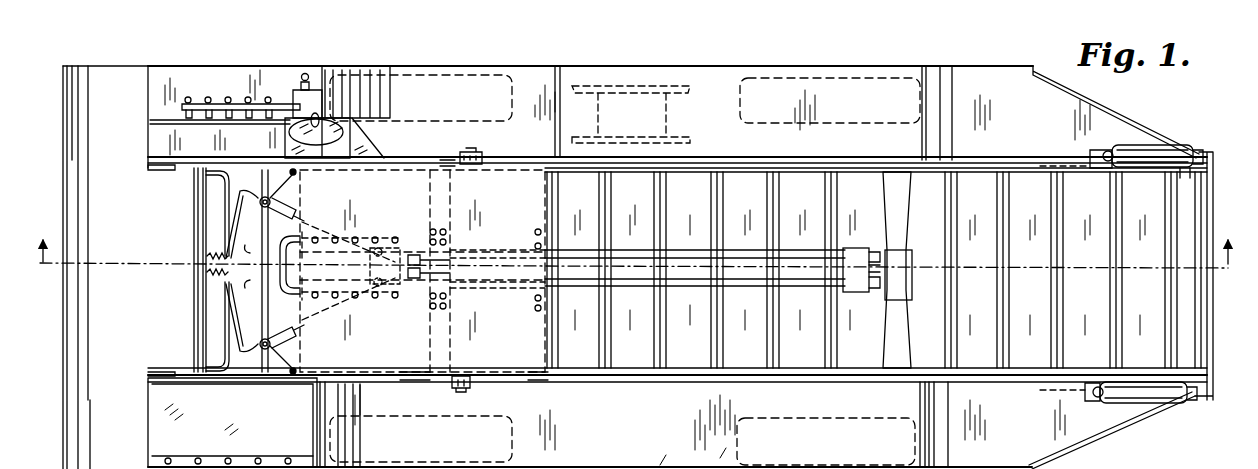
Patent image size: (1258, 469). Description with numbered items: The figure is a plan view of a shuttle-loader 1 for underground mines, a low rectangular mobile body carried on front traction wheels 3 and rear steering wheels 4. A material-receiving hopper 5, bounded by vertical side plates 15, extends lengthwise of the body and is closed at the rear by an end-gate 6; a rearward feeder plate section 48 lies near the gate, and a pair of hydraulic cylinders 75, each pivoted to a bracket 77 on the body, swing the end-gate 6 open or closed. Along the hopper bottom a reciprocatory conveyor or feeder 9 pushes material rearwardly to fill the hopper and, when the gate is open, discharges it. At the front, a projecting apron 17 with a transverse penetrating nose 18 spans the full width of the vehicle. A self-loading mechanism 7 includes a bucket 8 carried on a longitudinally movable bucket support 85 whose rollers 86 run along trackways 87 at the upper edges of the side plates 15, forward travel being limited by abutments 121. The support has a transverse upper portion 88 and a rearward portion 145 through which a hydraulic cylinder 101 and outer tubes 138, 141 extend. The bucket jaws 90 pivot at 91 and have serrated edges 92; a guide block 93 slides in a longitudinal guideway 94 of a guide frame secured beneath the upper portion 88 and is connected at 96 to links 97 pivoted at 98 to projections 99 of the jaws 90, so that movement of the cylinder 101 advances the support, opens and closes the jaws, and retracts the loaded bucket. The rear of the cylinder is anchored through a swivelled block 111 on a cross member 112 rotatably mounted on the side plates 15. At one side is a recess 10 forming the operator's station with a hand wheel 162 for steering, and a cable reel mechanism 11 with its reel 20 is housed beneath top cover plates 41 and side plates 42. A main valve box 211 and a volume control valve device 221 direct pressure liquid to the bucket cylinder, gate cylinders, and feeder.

The shuttle-loader 1 is at (1153, 124).
The front traction wheels 3 is at (434, 80).
The rear steering wheels 4 is at (886, 60).
The hopper 5 is at (978, 200).
The rear end-gate 6 is at (1212, 206).
The self-loading mechanism 7 is at (200, 312).
The bucket 8 is at (207, 222).
The reciprocatory conveyor or feeder 9 is at (1125, 323).
The recess 10 is at (236, 72).
The cable reel mechanism 11 is at (603, 90).
The vertical side plates 15 is at (860, 160).
The apron 17 is at (92, 97).
The penetrating nose 18 is at (63, 322).
The reel 20 is at (700, 88).
The top cover plates 41 is at (728, 86).
The side plates 42 is at (533, 68).
The rearward feeder plate section 48 is at (1192, 173).
The hydraulic cylinders 75 is at (1176, 150).
The bracket 77 is at (1104, 152).
The bucket support 85 is at (528, 377).
The rollers 86 is at (478, 153).
The trackways 87 is at (434, 158).
The transverse upper portion 88 is at (400, 372).
The bucket jaws 90 is at (213, 185).
The pivots 91 is at (292, 172).
The serrated edges 92 is at (218, 262).
The guide block 93 is at (402, 240).
The longitudinal guideway 94 is at (362, 232).
The pivotal connection 96 is at (392, 226).
The arms or links 97 is at (292, 209).
The pivotal connections 98 is at (240, 392).
The projections 99 is at (272, 205).
The hydraulic cylinder 101 is at (738, 262).
The swivelled block 111 is at (905, 262).
The cross member 112 is at (900, 313).
The abutments or stops 121 is at (152, 166).
The outer tube 138 is at (636, 253).
The outer tube 141 is at (640, 288).
The rearward portion 145 is at (532, 236).
The hand wheel 162 is at (340, 134).
The main valve box 211 is at (178, 121).
The volume control valve device 221 is at (318, 88).